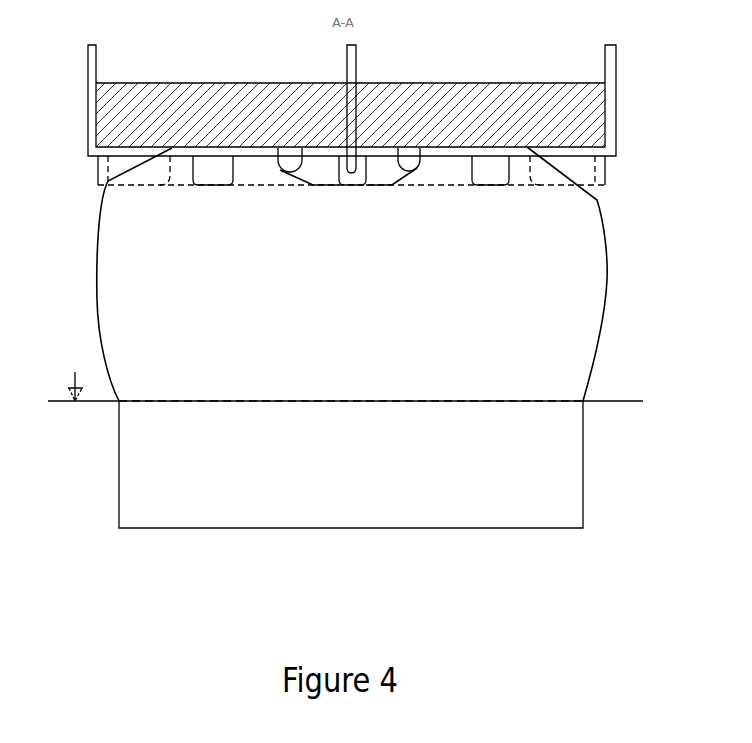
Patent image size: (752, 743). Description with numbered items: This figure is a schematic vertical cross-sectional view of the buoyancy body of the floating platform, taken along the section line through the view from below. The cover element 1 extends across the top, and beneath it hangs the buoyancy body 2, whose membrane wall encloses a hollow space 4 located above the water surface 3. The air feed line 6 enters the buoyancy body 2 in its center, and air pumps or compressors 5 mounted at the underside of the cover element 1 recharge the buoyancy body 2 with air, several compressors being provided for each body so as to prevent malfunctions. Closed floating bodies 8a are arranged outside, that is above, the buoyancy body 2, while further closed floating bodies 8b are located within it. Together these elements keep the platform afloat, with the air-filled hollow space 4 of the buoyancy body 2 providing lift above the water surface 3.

The cover element 1 is at (175, 110).
The buoyancy body 2 is at (98, 333).
The water surface 3 is at (90, 402).
The hollow space 4 is at (458, 340).
The air pumps or compressors 5 is at (410, 158).
The air feed line 6 is at (608, 105).
The closed floating bodies outside the buoyancy body 8a is at (317, 173).
The closed floating bodies within the buoyancy body 8b is at (495, 175).